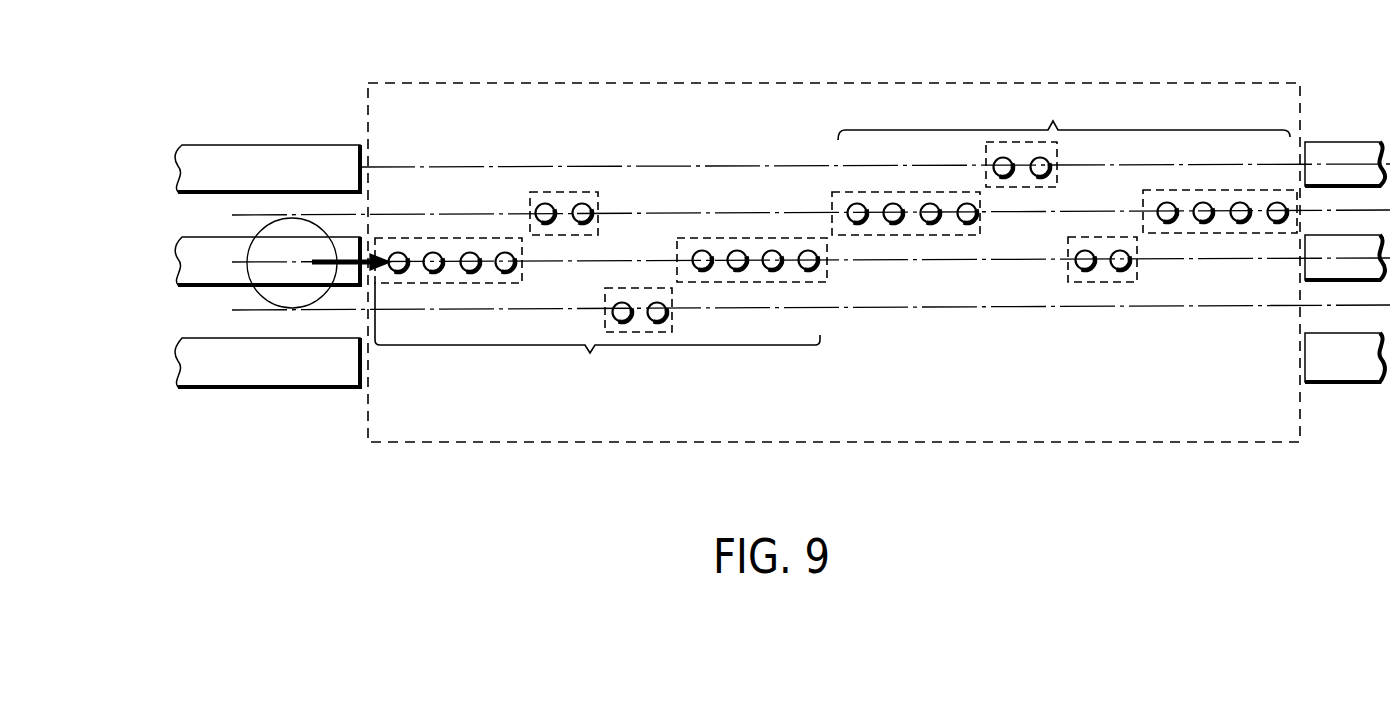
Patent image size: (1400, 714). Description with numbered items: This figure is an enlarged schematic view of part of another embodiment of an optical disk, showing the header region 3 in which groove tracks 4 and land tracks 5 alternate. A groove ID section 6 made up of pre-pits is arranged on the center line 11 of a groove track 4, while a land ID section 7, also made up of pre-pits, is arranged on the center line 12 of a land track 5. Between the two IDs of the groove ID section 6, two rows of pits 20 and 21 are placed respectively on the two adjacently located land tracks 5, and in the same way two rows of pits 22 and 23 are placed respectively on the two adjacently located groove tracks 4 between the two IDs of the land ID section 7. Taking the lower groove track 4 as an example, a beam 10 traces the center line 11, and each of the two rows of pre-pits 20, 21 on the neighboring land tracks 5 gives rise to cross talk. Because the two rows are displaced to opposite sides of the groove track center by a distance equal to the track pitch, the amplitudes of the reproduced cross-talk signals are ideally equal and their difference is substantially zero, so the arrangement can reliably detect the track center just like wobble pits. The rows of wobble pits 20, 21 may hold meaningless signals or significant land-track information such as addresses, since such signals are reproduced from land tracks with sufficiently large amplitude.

The header region 3 is at (734, 83).
The groove track 4 is at (736, 264).
The land track 5 is at (131, 212).
The groove ID section 6 is at (601, 311).
The land ID section 7 is at (1064, 162).
The beam 10 is at (260, 298).
The center line of groove track 11 is at (880, 261).
The center line of land track 12 is at (728, 211).
The row of pits 20 is at (598, 192).
The row of pits 21 is at (672, 322).
The row of pits 22 is at (1057, 147).
The row of pits 23 is at (1137, 272).